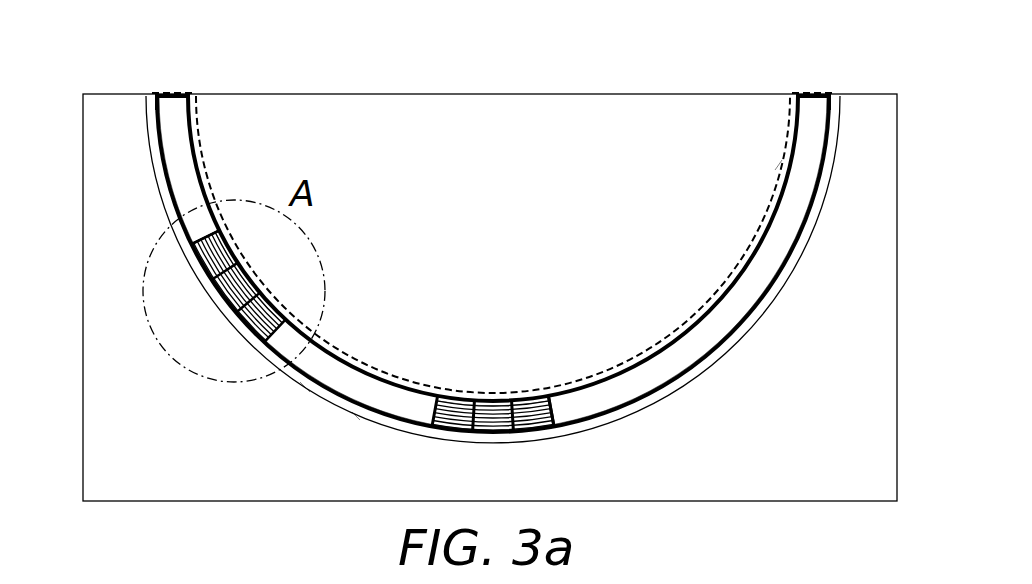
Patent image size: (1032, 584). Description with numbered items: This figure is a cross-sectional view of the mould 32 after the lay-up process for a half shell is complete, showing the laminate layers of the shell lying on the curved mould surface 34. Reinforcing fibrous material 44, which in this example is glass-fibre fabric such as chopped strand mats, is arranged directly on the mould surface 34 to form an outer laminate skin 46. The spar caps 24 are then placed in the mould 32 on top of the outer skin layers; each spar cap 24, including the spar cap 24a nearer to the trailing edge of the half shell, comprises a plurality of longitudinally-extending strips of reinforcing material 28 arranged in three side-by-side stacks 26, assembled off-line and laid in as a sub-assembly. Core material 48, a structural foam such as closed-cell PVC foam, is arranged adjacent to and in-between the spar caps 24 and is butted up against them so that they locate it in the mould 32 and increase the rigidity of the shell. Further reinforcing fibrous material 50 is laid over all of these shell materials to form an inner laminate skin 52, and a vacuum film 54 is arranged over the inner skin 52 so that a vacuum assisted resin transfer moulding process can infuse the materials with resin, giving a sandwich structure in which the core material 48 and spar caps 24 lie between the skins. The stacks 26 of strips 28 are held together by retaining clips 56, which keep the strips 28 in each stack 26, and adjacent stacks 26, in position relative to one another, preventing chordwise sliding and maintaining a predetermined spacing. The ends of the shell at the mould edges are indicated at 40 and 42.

The mould 32 is at (100, 69).
The mould surface 34 is at (707, 373).
The spar cap 24 is at (444, 450).
The spar cap nearer to the trailing edge 24a is at (221, 339).
The stacks 26 is at (285, 288).
The strips of reinforcing material 28 is at (231, 244).
The first end 40 is at (153, 90).
The second end 42 is at (831, 90).
The reinforcing fibrous material 44 is at (302, 380).
The outer laminate skin 46 is at (355, 413).
The core material 48 is at (181, 160).
The further reinforcing fibrous material 50 is at (593, 384).
The inner laminate skin 52 is at (672, 338).
The vacuum film 54 is at (778, 168).
The retaining clips 56 is at (517, 442).